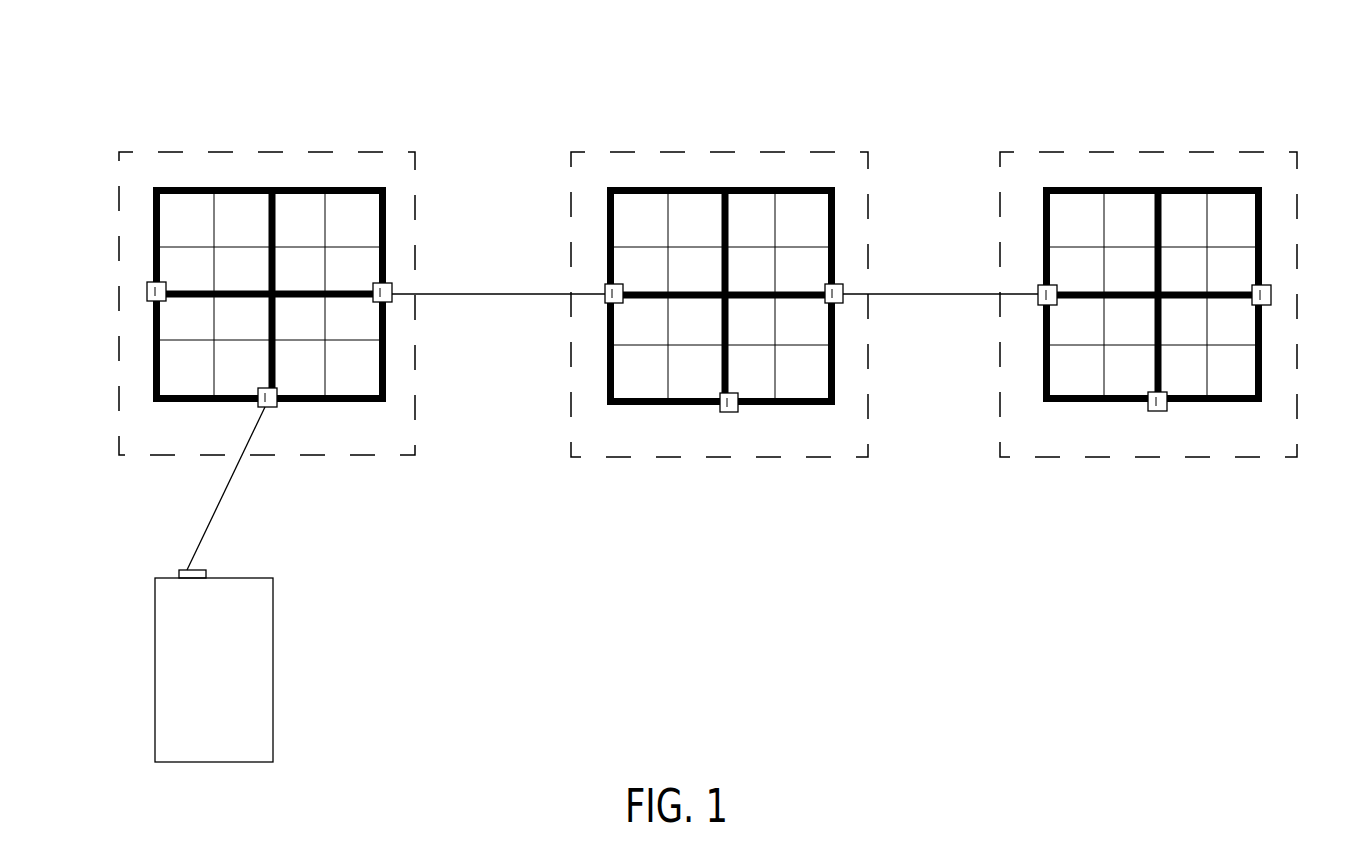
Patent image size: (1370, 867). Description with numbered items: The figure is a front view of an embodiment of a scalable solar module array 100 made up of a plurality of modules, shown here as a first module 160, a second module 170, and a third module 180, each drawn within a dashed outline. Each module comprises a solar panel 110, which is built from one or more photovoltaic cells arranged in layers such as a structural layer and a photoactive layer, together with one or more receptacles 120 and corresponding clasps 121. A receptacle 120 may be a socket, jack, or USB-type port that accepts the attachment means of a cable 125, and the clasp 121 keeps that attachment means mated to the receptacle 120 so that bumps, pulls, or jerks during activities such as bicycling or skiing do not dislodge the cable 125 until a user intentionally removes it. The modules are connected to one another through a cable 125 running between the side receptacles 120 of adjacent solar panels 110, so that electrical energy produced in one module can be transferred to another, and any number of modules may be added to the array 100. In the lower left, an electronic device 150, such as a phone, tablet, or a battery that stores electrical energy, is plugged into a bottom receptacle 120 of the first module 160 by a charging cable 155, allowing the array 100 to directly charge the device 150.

The scalable solar module array 100 is at (100, 58).
The solar panel 110 is at (351, 200).
The receptacle 120 is at (147, 295).
The clasp 121 is at (147, 285).
The cable 125 is at (473, 293).
The electronic device 150 is at (273, 608).
The charging cable 155 is at (217, 505).
The first module 160 is at (212, 151).
The second module 170 is at (620, 151).
The third module 180 is at (1045, 151).